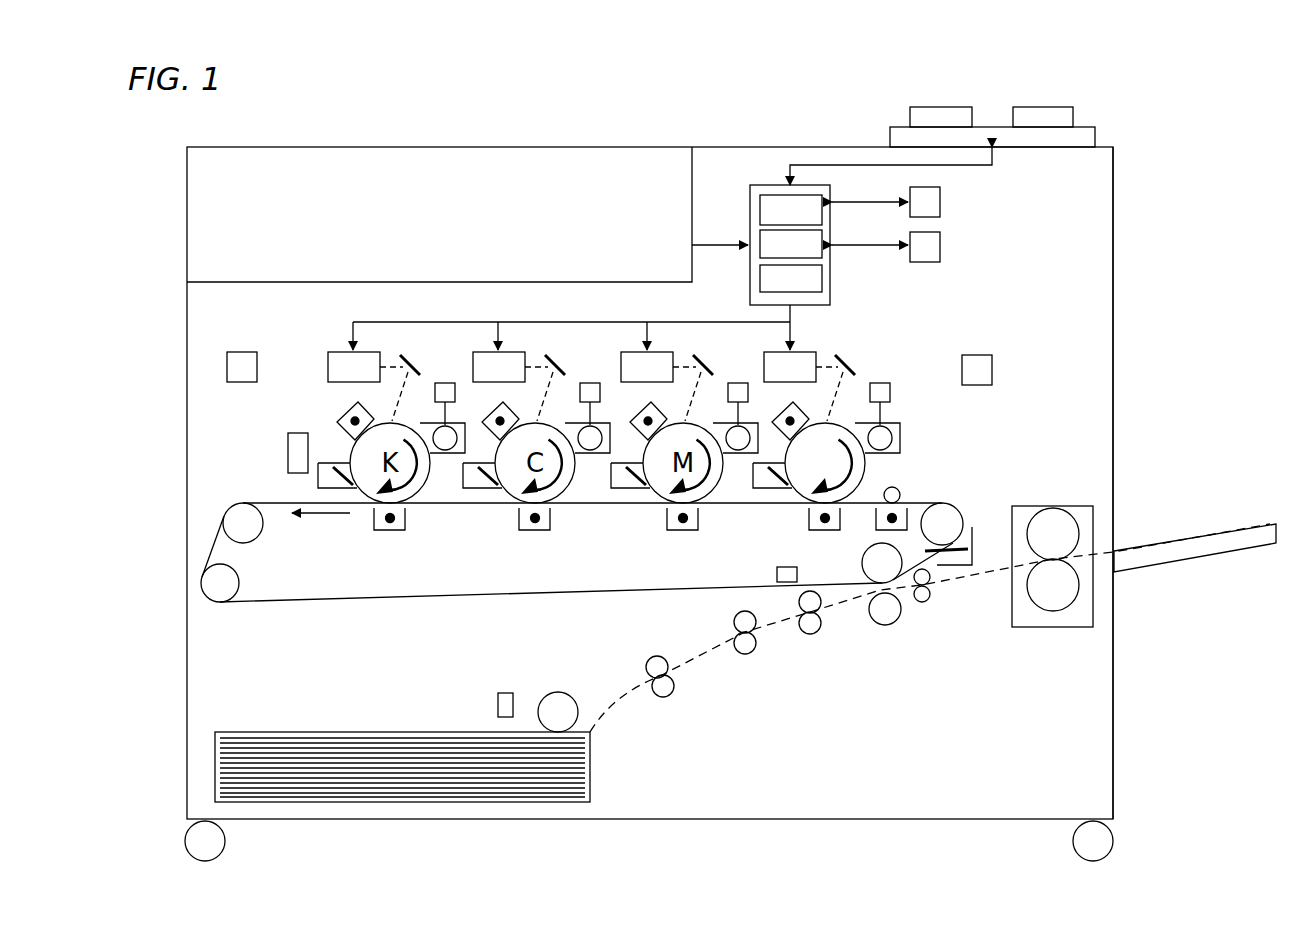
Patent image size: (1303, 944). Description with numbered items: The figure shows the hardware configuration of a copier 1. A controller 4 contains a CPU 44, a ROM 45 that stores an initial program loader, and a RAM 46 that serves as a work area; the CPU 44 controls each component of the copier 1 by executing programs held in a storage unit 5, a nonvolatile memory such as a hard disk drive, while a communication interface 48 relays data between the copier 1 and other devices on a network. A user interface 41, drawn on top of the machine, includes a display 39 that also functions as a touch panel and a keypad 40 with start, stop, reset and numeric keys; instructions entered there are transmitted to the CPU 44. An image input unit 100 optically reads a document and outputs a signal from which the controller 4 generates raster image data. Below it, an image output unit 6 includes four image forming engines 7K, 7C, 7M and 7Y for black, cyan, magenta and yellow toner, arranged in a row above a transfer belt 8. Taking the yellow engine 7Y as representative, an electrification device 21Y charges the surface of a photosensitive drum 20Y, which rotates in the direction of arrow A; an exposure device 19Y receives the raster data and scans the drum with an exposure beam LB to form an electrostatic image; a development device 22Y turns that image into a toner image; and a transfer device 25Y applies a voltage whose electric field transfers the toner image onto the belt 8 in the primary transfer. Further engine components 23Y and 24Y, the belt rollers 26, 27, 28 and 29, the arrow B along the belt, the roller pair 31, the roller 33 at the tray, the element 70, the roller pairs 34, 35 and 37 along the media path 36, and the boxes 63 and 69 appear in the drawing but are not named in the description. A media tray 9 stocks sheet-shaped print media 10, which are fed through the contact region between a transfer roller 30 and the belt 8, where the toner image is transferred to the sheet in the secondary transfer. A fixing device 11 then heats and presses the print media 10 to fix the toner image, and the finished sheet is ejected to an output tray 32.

The copier 1 is at (1120, 231).
The image input unit 100 is at (316, 147).
The controller 4 is at (750, 295).
The CPU 44 is at (760, 201).
The ROM 45 is at (760, 240).
The RAM 46 is at (822, 279).
The communication interface 48 is at (940, 201).
The storage unit 5 is at (940, 247).
The image output unit 6 is at (930, 318).
The image forming engine 7K is at (414, 352).
The image forming engine 7C is at (559, 352).
The image forming engine 7M is at (706, 352).
The image forming engine 7Y is at (856, 348).
The exposure beam LB is at (832, 362).
The exposure device 19Y is at (766, 379).
The photosensitive drum 20Y is at (845, 425).
The electrification device 21Y is at (784, 416).
The development device 22Y is at (900, 443).
The toner supply unit 23Y is at (890, 397).
The cleaning device 24Y is at (752, 479).
The transfer device 25Y is at (812, 528).
The arrow A is at (862, 466).
The transfer belt 8 is at (365, 599).
The belt moving direction B is at (330, 516).
The drive roller 26 is at (958, 512).
The tension roller 27 is at (260, 534).
The support roller 28 is at (239, 583).
The secondary transfer backup roller 29 is at (862, 570).
The transfer roller 30 is at (897, 620).
The registration rollers 31 is at (937, 602).
The fixing device 11 is at (1052, 503).
The output tray 32 is at (1230, 546).
The media tray 9 is at (426, 742).
The print media 10 is at (450, 733).
The pickup roller 33 is at (558, 692).
The sheet sensor 70 is at (505, 693).
The feed roller pair 34 is at (673, 699).
The conveying roller pair 35 is at (758, 660).
The sheet conveying path 36 is at (623, 690).
The conveying roller pair 37 is at (813, 640).
The display 39 is at (945, 107).
The keypad 40 is at (1050, 108).
The user interface 41 is at (993, 103).
The sensor 63 is at (288, 455).
The sensor 69 is at (257, 367).